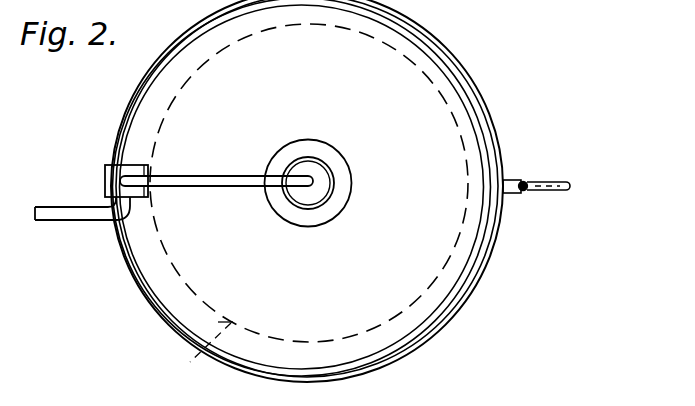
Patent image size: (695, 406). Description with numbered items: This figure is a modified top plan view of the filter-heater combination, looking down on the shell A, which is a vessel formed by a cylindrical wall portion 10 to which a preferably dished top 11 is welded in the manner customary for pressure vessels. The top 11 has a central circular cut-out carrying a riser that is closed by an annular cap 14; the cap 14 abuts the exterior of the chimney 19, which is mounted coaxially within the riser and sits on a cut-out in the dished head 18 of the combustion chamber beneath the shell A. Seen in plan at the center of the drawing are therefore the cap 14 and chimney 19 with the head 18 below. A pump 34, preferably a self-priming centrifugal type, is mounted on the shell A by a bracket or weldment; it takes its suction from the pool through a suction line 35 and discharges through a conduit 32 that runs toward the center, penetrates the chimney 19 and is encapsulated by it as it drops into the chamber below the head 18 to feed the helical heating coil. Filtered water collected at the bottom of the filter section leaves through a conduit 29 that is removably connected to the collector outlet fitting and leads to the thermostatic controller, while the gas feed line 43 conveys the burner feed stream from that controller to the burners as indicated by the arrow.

The cylindrical wall portion 10 is at (127, 264).
The top 11 is at (160, 288).
The shell A is at (163, 323).
The head 18 is at (190, 361).
The cap 14 is at (336, 207).
The chimney 19 is at (338, 182).
The conduit 32 is at (222, 168).
The pump 34 is at (105, 170).
The suction line 35 is at (42, 222).
The conduit 29 is at (524, 192).
The feed line 43 is at (573, 188).